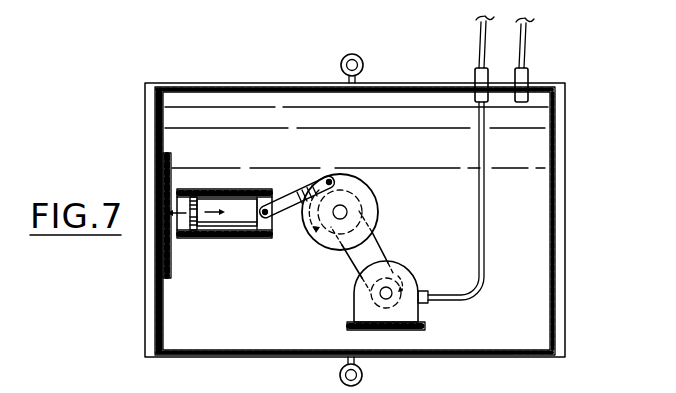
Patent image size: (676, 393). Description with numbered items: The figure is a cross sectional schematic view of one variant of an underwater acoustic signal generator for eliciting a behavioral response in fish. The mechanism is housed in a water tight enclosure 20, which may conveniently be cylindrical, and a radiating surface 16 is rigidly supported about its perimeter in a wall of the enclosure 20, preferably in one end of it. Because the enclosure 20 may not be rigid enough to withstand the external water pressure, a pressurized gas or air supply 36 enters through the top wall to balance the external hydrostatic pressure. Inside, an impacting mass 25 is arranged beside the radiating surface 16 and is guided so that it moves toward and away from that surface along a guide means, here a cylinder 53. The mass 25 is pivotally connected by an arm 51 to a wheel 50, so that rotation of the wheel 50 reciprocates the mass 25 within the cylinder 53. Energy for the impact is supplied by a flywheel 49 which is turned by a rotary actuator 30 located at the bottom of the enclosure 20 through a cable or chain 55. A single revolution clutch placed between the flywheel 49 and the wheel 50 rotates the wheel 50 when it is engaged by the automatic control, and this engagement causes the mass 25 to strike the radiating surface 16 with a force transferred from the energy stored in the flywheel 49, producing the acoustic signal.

The radiating surface 16 is at (157, 318).
The water tight enclosure 20 is at (558, 138).
The impacting mass 25 is at (233, 224).
The rotary actuator 30 is at (354, 311).
The pressurized gas or air supply 36 is at (530, 77).
The flywheel 49 is at (360, 205).
The wheel 50 is at (316, 239).
The arm 51 is at (296, 188).
The cylinder 53 is at (203, 240).
The cable or chain 55 is at (383, 247).